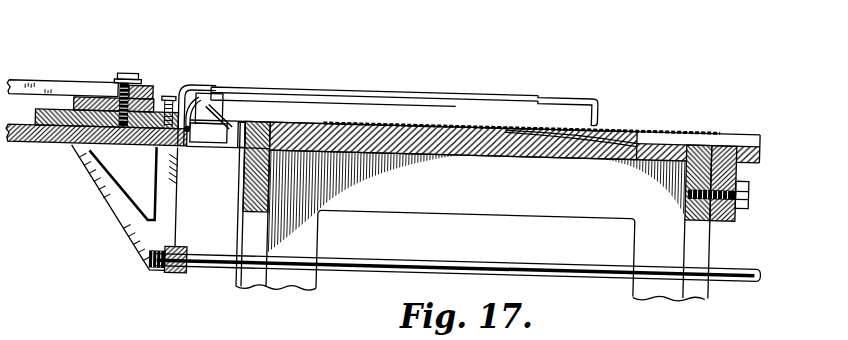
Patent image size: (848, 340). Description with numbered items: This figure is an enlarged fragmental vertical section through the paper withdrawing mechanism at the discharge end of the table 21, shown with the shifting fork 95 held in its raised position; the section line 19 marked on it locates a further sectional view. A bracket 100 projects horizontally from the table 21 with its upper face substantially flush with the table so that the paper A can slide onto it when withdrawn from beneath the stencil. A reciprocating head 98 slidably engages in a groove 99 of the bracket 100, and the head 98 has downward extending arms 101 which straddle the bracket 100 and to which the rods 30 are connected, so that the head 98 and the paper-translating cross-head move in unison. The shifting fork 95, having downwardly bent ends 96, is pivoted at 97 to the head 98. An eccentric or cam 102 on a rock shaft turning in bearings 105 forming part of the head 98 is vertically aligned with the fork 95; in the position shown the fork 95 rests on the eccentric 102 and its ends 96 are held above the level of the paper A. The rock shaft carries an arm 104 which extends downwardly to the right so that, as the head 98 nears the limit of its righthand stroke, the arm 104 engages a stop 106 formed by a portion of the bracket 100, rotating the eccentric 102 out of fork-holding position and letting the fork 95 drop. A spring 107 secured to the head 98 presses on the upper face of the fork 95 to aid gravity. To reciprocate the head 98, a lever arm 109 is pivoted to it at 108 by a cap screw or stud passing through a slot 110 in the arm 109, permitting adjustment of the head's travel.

The section line 19- 19 is at (197, 33).
The table 21 is at (468, 128).
The rods 30 is at (600, 264).
The shifting fork 95 is at (566, 80).
The downwardly bent ends 96 is at (600, 96).
The pivot 97 is at (185, 142).
The reciprocating head 98 is at (87, 96).
The groove 99 is at (23, 124).
The bracket 100 is at (65, 131).
The downward extending arms 101 is at (117, 195).
The eccentric or cam 102 is at (229, 92).
The arm 104 is at (218, 120).
The bearings 105 is at (207, 95).
The stop 106 is at (241, 164).
The spring 107 is at (232, 77).
The pivot 108 is at (134, 68).
The lever arm 109 is at (49, 77).
The slot 110 is at (142, 79).
The paper A is at (423, 111).